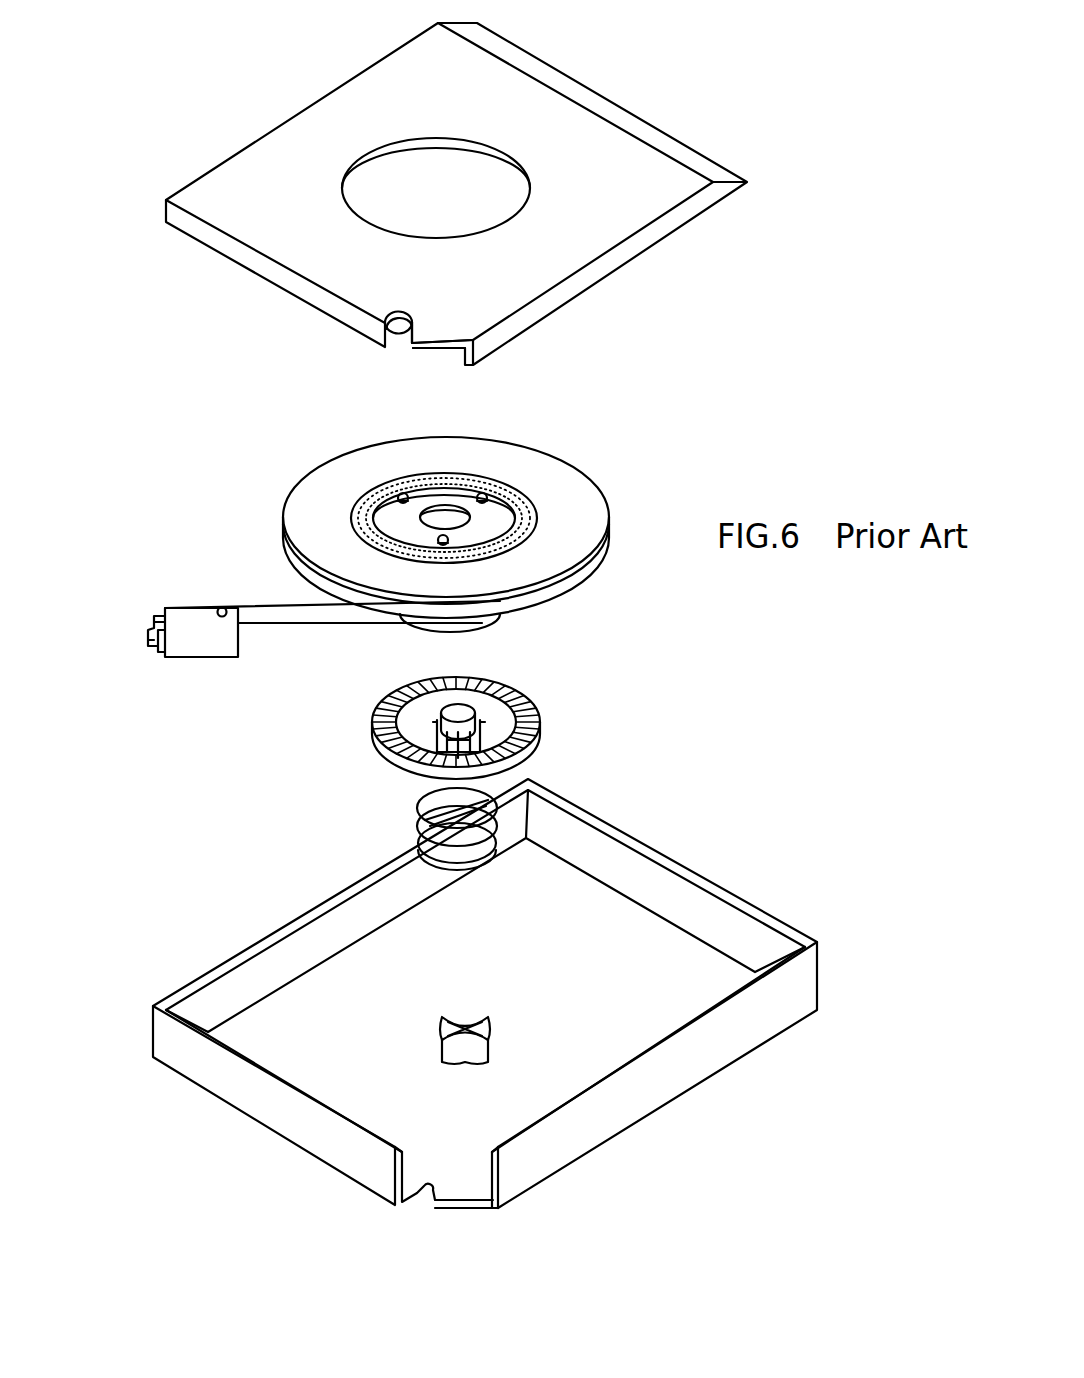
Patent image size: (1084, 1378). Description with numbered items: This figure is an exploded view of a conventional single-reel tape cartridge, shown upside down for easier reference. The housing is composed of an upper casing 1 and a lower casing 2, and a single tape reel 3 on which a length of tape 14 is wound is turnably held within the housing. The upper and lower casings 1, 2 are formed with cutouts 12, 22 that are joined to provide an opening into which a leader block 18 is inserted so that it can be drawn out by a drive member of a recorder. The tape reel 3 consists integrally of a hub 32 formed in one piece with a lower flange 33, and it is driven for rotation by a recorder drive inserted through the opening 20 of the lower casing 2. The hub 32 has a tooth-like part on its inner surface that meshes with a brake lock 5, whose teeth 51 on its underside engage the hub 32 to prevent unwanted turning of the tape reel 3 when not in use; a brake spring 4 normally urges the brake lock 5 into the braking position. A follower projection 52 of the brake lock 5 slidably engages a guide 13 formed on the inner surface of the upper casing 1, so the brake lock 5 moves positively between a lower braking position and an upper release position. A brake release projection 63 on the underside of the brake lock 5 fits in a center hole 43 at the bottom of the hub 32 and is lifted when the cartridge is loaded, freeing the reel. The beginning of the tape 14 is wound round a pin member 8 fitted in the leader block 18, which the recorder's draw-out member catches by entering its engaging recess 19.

The upper casing 1 is at (768, 896).
The lower casing 2 is at (487, 72).
The tape reel 3 is at (512, 473).
The brake spring 4 is at (415, 810).
The brake lock 5 is at (527, 683).
The pin member 8 is at (222, 608).
The cutout 12 is at (462, 1191).
The guide 13 is at (456, 1053).
The tape 14 is at (278, 617).
The leader block 18 is at (205, 648).
The engaging recess 19 is at (150, 640).
The opening 20 is at (512, 210).
The cutout 22 is at (412, 348).
The hub 32 is at (500, 622).
The lower flange 33 is at (570, 489).
The center hole 43 is at (470, 529).
The teeth 51 is at (542, 700).
The follower projection 52 is at (432, 728).
The brake release projection 63 is at (460, 711).